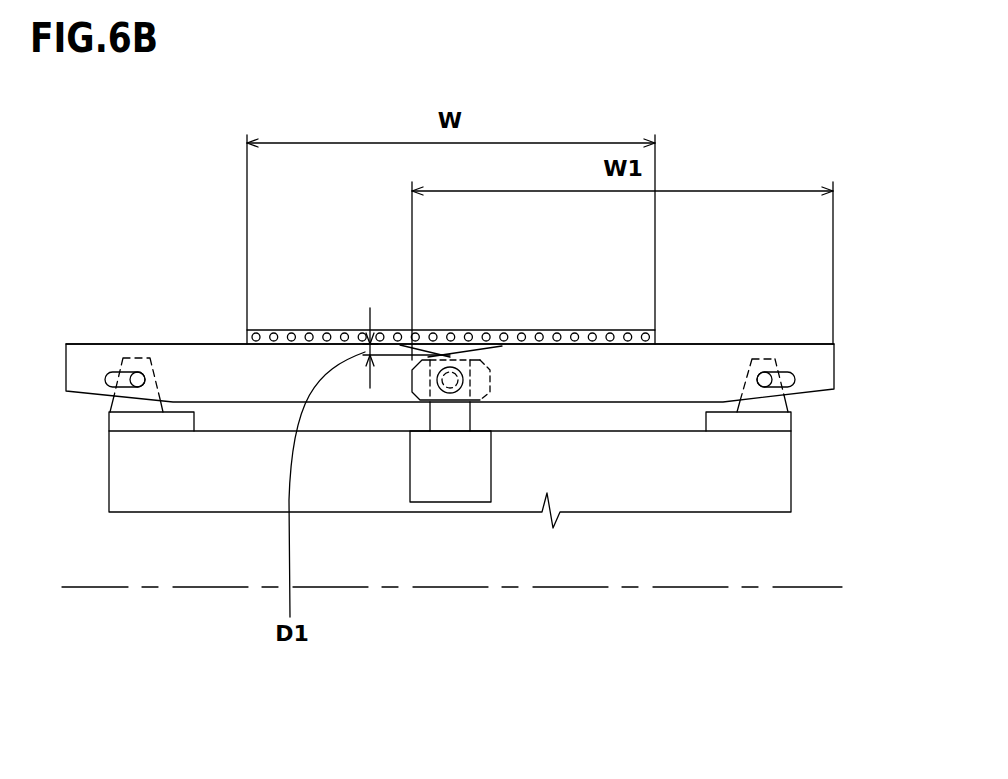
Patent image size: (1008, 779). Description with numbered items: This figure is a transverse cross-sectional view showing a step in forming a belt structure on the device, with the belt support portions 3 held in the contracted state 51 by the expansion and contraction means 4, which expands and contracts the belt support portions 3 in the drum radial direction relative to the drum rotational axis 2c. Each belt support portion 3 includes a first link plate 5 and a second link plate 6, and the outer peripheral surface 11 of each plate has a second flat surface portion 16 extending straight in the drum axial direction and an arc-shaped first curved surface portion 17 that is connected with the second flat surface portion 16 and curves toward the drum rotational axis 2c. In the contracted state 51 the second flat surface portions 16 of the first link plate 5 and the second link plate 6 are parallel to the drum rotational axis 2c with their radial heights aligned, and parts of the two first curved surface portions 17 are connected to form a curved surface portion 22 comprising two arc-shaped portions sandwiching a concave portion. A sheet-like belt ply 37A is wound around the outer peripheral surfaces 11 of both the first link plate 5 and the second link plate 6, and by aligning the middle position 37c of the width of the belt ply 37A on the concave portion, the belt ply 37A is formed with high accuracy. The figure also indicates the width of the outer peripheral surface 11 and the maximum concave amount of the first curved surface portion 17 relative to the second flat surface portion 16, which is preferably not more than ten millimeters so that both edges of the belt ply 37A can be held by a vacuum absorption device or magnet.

The contracted state 51 is at (773, 150).
The belt support portion 3 is at (845, 360).
The first link plate 5 is at (197, 367).
The second link plate 6 is at (700, 367).
The outer peripheral surface 11 is at (127, 343).
The second flat surface portion 16 is at (778, 320).
The belt ply 37A is at (317, 337).
The middle position 37c is at (450, 330).
The curved surface portion 22 is at (438, 355).
The first curved surface portion 17 is at (454, 292).
The expansion and contraction means 4 is at (450, 473).
The drum rotational axis 2c is at (797, 587).